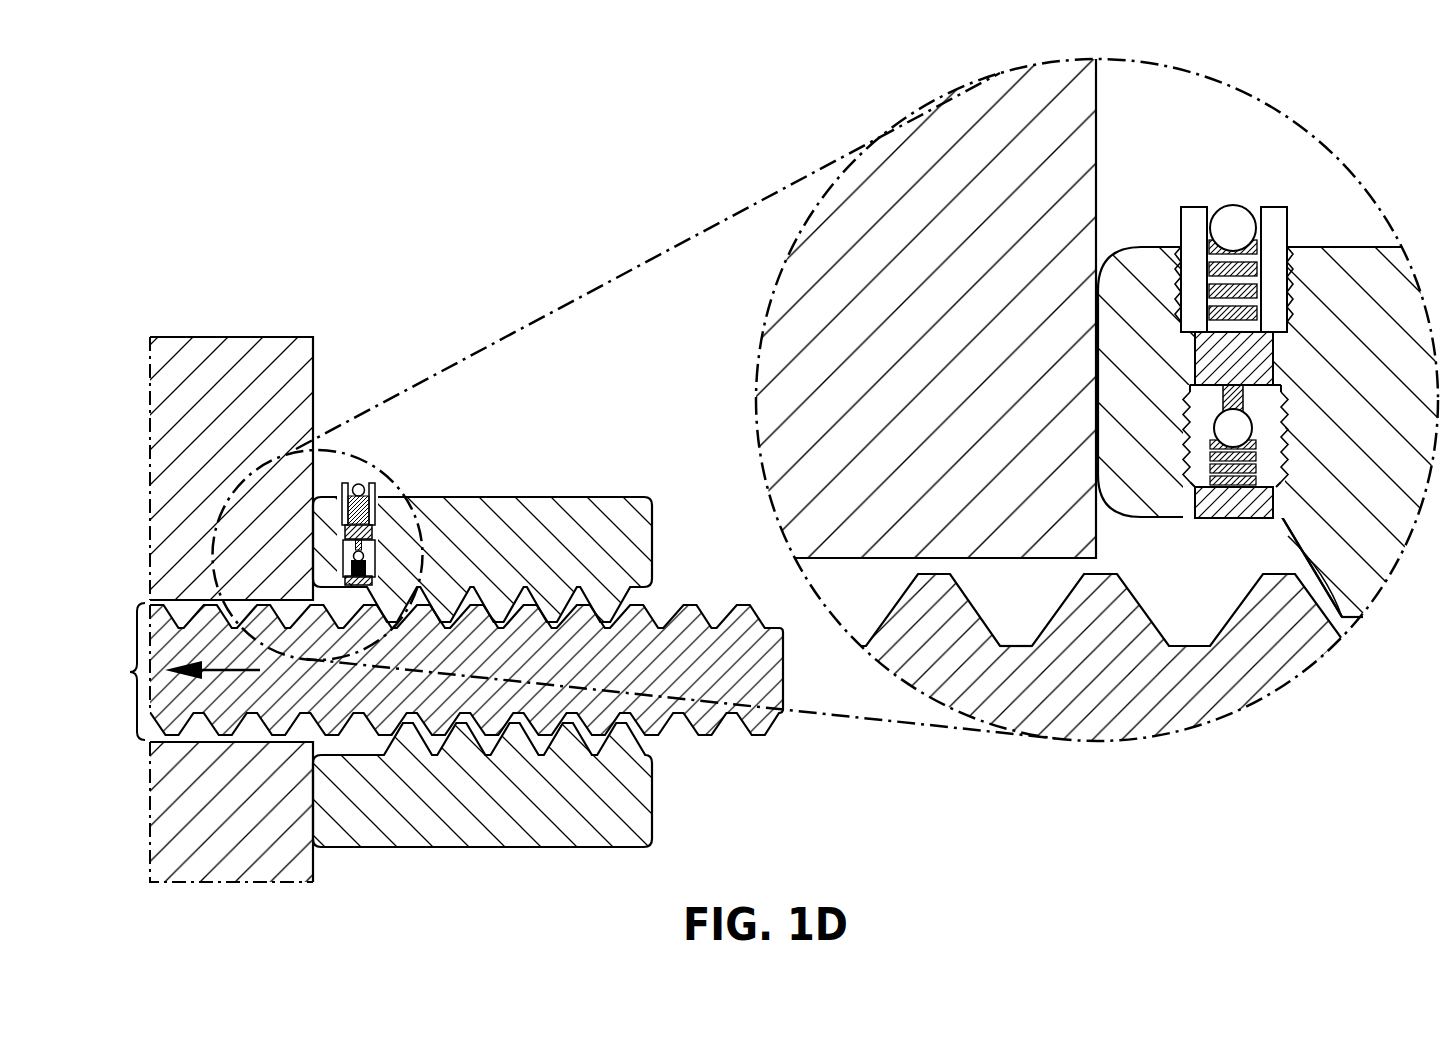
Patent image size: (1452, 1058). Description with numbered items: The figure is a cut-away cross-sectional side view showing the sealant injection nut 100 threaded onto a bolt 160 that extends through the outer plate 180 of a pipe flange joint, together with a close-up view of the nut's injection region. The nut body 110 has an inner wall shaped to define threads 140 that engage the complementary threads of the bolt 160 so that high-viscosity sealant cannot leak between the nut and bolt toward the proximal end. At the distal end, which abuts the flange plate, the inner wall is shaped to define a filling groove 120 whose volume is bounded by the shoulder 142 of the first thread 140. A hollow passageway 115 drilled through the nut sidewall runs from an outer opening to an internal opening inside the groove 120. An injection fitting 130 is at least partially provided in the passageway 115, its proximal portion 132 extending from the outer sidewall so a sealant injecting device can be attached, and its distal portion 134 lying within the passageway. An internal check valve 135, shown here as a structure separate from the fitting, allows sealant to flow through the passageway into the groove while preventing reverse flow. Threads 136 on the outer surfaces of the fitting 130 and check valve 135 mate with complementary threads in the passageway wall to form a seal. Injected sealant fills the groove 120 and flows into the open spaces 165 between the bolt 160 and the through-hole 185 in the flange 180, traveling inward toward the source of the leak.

The sealant injection nut 100 is at (404, 473).
The nut body 110 is at (1382, 304).
The hollow passageway 115 is at (1241, 541).
The filling groove 120 is at (1173, 605).
The injection fitting 130 is at (1186, 193).
The proximal portion of the injection fitting 132 is at (1164, 227).
The distal portion of the injection fitting 134 is at (1171, 483).
The internal check valve 135 is at (1240, 428).
The threads 136 is at (1168, 386).
The threads 140 is at (1362, 585).
The shoulder 142 is at (1343, 616).
The bolt 160 is at (660, 638).
The open spaces 165 is at (1010, 571).
The outer plate 180 is at (238, 348).
The through-hole 185 is at (166, 671).